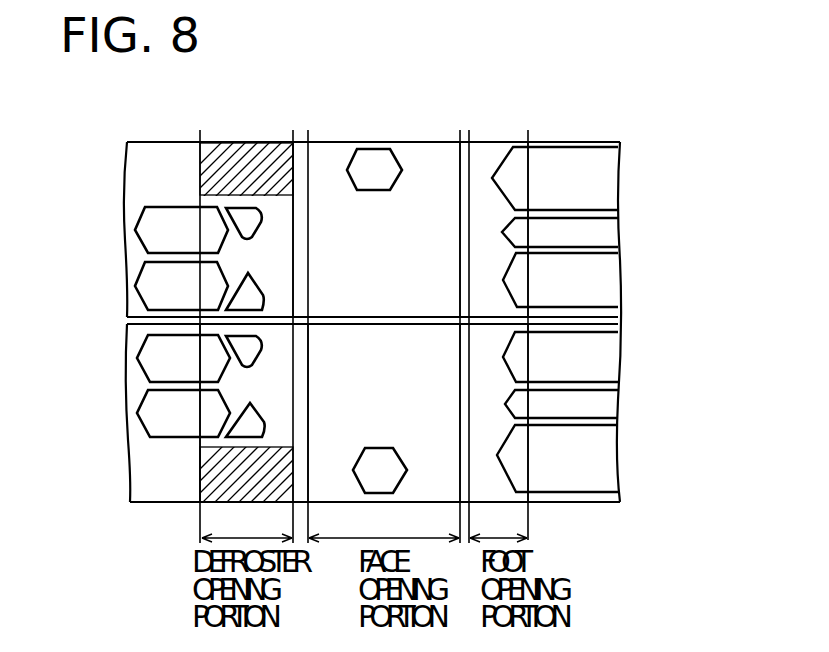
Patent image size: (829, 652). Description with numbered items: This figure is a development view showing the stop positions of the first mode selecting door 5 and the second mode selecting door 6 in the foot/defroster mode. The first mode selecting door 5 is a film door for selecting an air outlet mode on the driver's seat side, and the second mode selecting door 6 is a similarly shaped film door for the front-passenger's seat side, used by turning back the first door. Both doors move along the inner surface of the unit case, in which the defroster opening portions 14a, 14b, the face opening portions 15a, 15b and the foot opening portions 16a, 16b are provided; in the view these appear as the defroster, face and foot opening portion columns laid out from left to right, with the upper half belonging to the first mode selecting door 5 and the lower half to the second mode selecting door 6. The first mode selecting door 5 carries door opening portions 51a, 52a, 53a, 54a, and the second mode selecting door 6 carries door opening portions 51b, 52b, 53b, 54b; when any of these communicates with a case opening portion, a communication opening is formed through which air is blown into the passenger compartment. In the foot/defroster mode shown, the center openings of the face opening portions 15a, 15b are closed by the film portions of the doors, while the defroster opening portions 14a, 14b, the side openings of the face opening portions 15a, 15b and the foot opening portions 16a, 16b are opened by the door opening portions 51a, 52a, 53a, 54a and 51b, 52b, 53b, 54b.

The first mode selecting door 5 is at (138, 172).
The second mode selecting door 6 is at (137, 453).
The defroster opening portion 14a is at (293, 198).
The defroster opening portion 14b is at (200, 403).
The face opening portion 15a is at (460, 150).
The face opening portion 15b is at (384, 430).
The foot opening portion 16a is at (522, 162).
The foot opening portion 16b is at (472, 453).
The door opening portion 51a is at (562, 146).
The door opening portion 51b is at (580, 340).
The door opening portion 52a is at (360, 152).
The door opening portion 52b is at (360, 470).
The door opening portion 53a is at (250, 209).
The door opening portion 53b is at (257, 338).
The door opening portion 54a is at (150, 213).
The door opening portion 54b is at (157, 435).